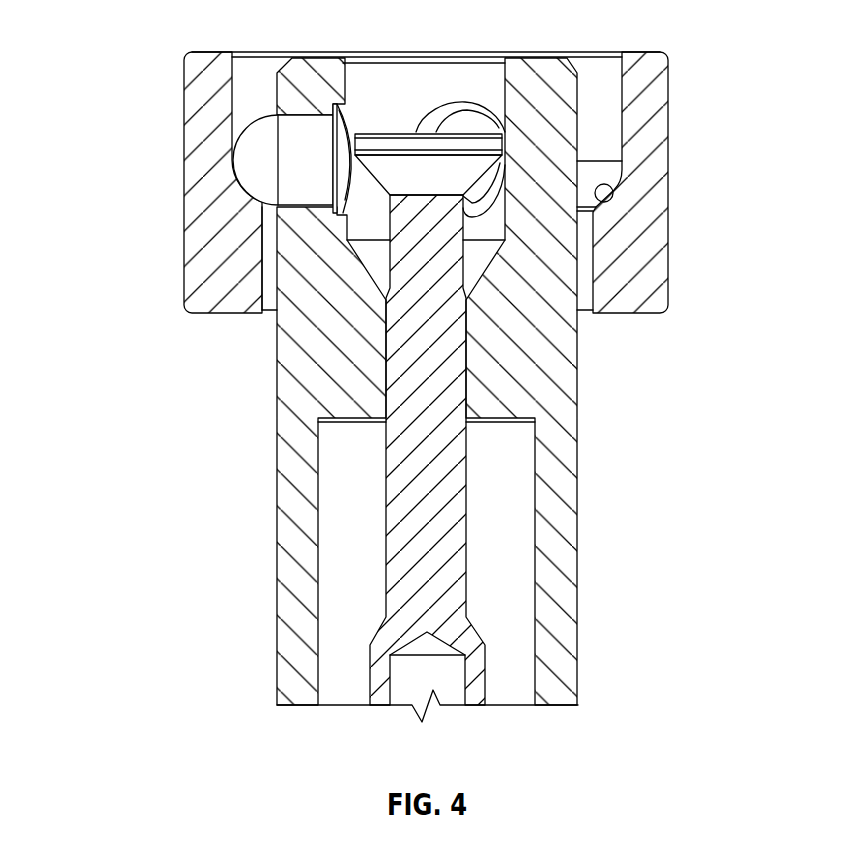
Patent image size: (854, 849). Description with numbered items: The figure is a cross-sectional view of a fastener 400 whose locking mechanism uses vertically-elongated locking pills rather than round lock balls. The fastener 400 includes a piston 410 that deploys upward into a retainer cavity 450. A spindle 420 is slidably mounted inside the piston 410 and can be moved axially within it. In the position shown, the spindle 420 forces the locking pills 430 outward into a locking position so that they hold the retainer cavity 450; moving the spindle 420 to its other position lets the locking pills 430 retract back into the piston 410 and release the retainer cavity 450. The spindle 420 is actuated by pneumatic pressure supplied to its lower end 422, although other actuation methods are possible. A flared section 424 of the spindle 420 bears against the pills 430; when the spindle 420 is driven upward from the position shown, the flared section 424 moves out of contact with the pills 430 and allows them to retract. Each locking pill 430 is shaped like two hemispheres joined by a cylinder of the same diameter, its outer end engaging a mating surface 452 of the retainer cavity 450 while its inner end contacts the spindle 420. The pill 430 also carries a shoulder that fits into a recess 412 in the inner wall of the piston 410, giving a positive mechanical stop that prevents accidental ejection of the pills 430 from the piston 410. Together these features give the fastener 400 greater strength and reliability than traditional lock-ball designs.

The fastener 400 is at (399, 381).
The piston 410 is at (565, 565).
The recess 412 is at (352, 108).
The spindle 420 is at (513, 446).
The lower end 422 is at (412, 686).
The flared section 424 is at (446, 190).
The locking pill 430 is at (265, 172).
The retainer cavity 450 is at (657, 133).
The mating surface 452 is at (613, 190).